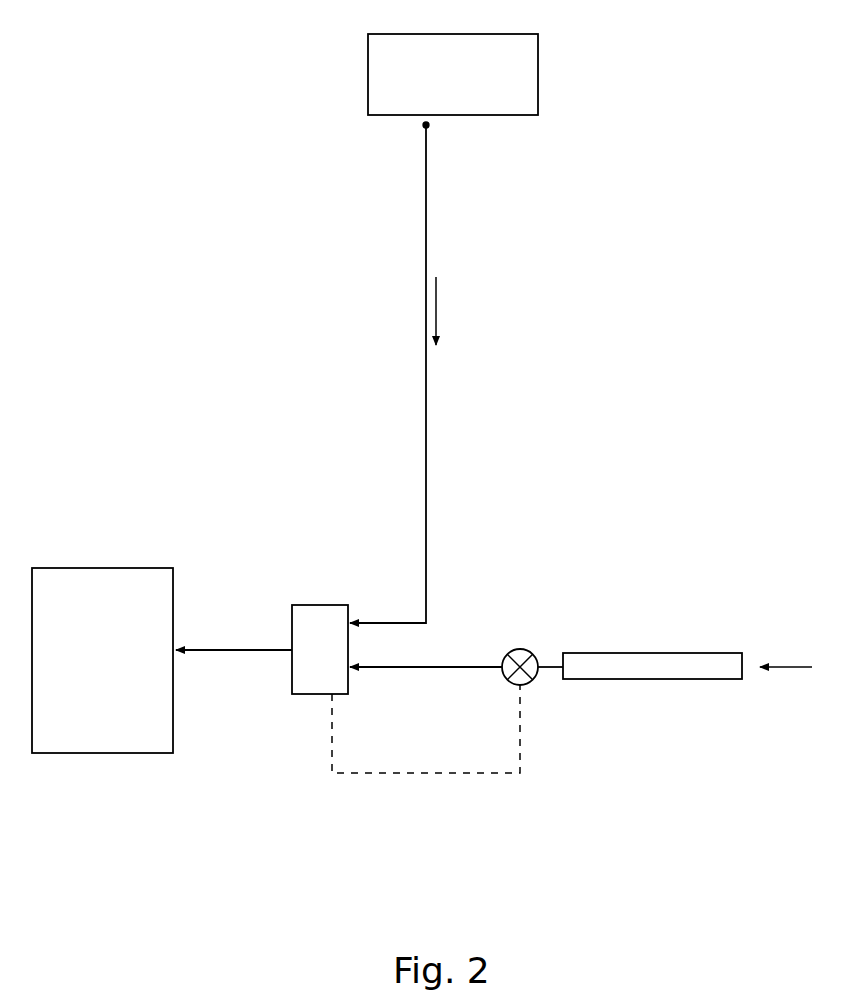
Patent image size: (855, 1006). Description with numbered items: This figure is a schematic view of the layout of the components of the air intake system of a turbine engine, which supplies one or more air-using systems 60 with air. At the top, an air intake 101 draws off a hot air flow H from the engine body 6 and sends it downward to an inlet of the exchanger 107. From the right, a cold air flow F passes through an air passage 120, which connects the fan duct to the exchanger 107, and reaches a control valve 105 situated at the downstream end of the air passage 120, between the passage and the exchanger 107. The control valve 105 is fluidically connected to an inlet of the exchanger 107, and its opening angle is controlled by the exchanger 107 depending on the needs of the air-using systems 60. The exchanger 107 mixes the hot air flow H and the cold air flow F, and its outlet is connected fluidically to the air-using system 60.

The engine body 6 is at (538, 55).
The air intake 101 is at (428, 127).
The hot air flow H is at (451, 311).
The exchanger 107 is at (312, 694).
The air-using system 60 is at (93, 753).
The control valve 105 is at (528, 652).
The air passage 120 is at (725, 679).
The cold air flow F is at (786, 650).